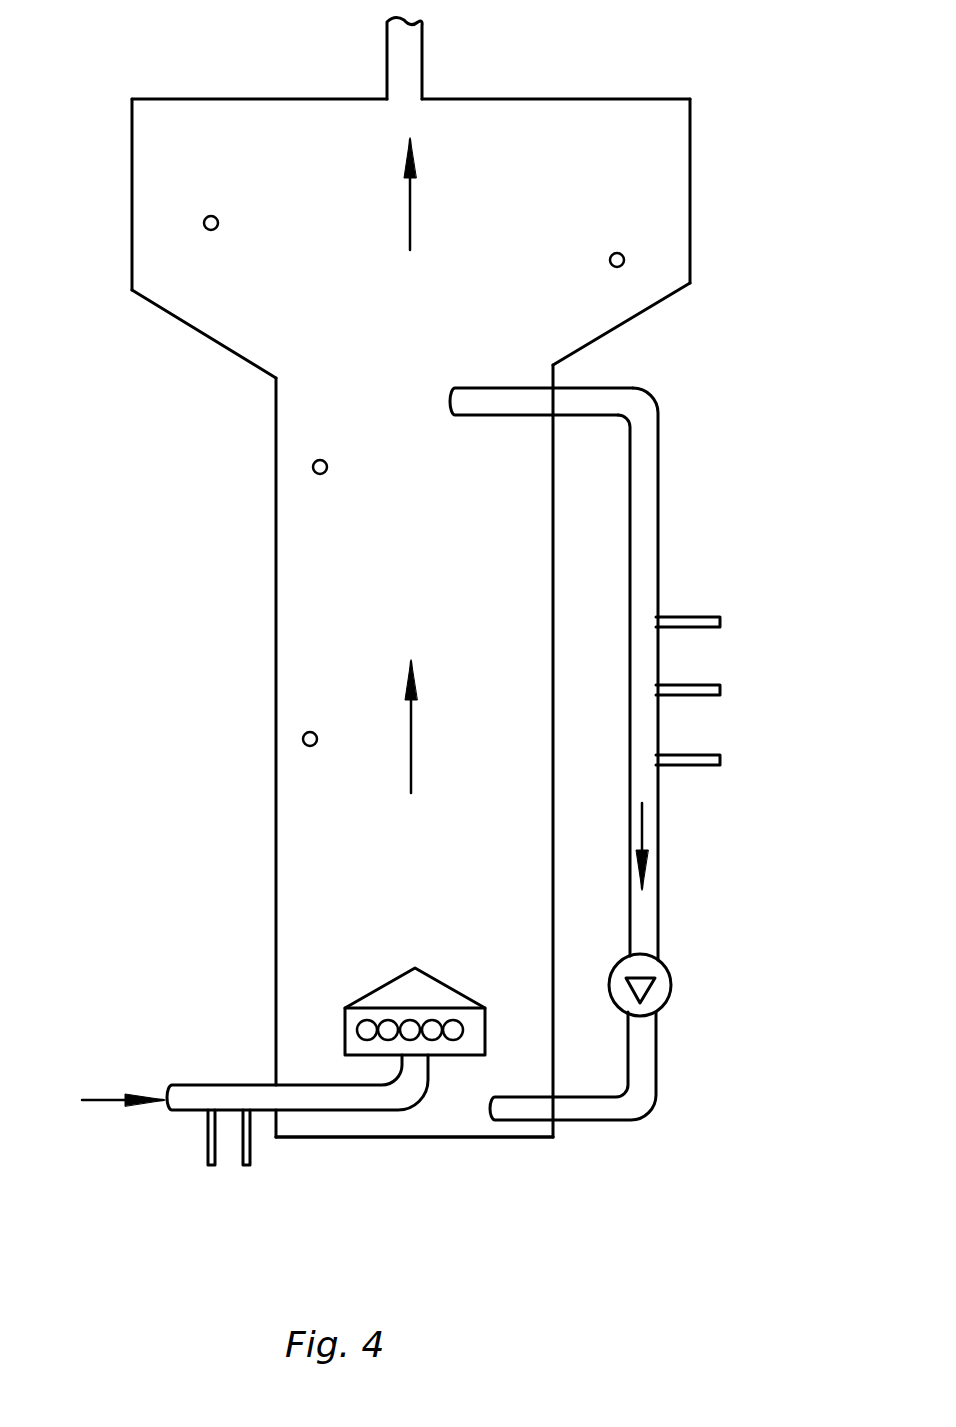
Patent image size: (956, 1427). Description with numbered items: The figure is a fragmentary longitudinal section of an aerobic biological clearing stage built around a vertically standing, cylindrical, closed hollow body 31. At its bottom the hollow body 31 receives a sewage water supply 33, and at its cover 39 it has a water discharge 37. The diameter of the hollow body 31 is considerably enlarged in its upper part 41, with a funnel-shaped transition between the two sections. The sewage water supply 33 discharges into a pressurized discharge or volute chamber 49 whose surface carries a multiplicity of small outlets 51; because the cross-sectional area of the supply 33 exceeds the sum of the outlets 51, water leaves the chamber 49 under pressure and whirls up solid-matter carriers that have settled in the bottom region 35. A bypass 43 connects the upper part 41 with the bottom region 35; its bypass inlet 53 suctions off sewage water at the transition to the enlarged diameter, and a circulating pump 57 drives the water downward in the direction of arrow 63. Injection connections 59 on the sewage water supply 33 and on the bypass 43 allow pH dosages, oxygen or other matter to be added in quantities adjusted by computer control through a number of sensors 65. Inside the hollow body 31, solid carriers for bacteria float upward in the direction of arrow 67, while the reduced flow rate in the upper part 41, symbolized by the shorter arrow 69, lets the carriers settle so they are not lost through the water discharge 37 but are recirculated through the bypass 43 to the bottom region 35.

The hollow body 31 is at (275, 565).
The sewage water supply 33 is at (208, 1085).
The bottom region 35 is at (450, 1120).
The water discharge 37 is at (408, 62).
The cover 39 is at (276, 99).
The upper part 41 is at (385, 338).
The bypass 43 is at (640, 446).
The pressurized discharge or volute chamber 49 is at (395, 970).
The outlets 51 is at (345, 1030).
The bypass inlet 53 is at (472, 405).
The circulating pump 57 is at (668, 988).
The injection connections 59 is at (720, 622).
The arrow 63 is at (642, 827).
The sensors 65 is at (204, 222).
The arrow 67 is at (411, 785).
The shorter arrow 69 is at (410, 222).